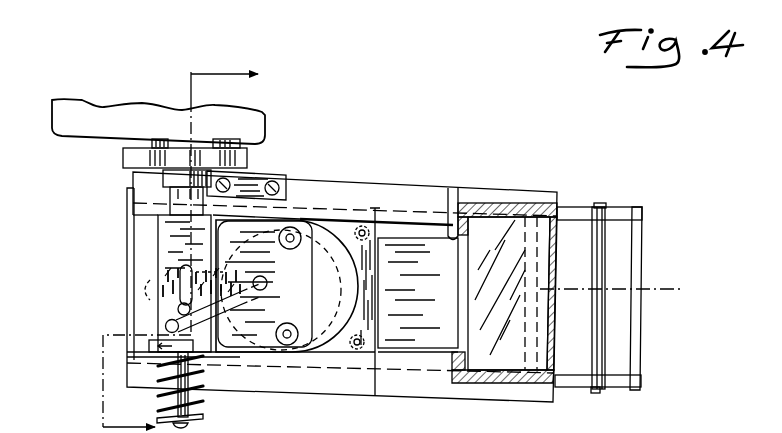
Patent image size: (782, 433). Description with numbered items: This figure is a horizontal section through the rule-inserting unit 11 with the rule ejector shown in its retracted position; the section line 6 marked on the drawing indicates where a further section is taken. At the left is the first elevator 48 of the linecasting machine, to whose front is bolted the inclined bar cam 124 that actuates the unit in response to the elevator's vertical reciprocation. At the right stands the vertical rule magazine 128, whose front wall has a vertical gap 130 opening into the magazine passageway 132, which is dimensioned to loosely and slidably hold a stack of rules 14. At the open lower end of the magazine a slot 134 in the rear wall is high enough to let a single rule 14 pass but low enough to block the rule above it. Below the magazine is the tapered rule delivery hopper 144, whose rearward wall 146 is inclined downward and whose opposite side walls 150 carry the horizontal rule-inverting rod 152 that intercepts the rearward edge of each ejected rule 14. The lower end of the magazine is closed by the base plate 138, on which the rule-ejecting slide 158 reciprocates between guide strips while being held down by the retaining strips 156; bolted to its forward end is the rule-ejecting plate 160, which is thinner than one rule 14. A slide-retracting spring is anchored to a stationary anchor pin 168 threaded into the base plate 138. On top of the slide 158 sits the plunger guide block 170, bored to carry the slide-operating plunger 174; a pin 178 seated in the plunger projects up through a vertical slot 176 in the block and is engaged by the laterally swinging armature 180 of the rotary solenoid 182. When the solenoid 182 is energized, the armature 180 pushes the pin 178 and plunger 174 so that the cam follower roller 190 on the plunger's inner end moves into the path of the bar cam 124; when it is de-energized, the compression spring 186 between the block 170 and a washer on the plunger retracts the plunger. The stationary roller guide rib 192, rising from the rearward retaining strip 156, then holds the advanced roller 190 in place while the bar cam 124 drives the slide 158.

The section line 6- 6 is at (192, 246).
The rule-inserting unit 11 is at (632, 190).
The rule 14 is at (500, 350).
The first elevator 48 is at (62, 100).
The inclined bar cam 124 is at (123, 157).
The rule magazine 128 is at (520, 198).
The vertical gap 130 is at (450, 207).
The magazine passageway 132 is at (513, 200).
The slot 134 is at (629, 273).
The base plate 138 is at (393, 210).
The rule delivery hopper 144 is at (616, 265).
The rearward wall 146 is at (634, 347).
The side walls 150 is at (617, 388).
The rule-inverting rod 152 is at (600, 313).
The retaining strips 156 is at (360, 200).
The rule-ejecting slide 158 is at (340, 350).
The rule-ejecting plate 160 is at (420, 350).
The stationary anchor pin 168 is at (150, 275).
The plunger guide block 170 is at (157, 235).
The slide-operating plunger 174 is at (160, 375).
The vertical slot 176 is at (178, 292).
The pin 178 is at (178, 310).
The armature 180 is at (166, 328).
The rotary solenoid 182 is at (317, 210).
The compression spring 186 is at (157, 384).
The cam follower roller 190 is at (165, 178).
The roller guide rib 192 is at (287, 181).